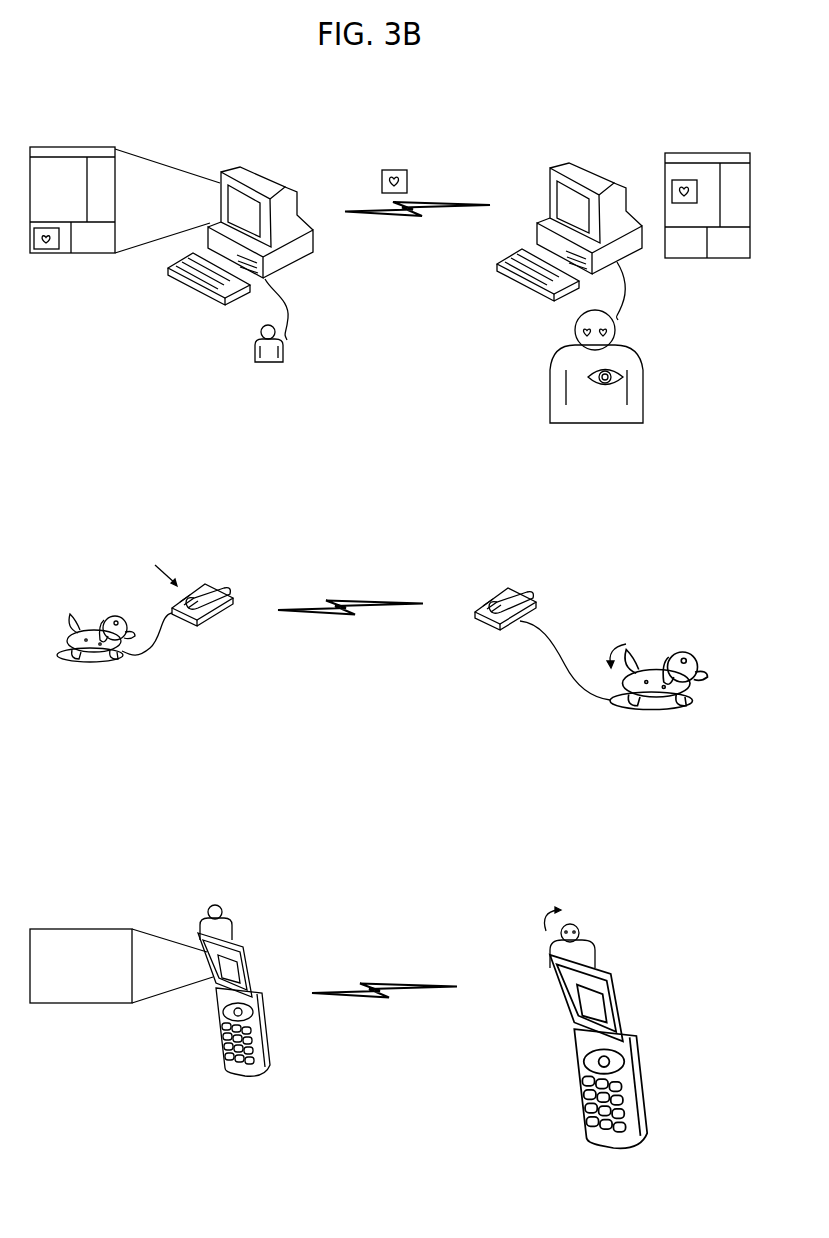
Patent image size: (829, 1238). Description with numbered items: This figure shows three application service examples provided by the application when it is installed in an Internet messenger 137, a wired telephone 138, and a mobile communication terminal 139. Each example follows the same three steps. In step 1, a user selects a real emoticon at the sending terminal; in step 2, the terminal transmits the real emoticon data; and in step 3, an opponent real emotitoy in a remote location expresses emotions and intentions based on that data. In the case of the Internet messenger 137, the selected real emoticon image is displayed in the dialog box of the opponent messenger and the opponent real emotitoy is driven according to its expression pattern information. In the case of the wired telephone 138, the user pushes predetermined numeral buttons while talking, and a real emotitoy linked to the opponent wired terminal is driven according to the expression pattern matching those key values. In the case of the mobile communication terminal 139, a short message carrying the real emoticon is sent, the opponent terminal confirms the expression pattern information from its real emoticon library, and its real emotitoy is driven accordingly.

The real emoticon selection step 1 is at (287, 353).
The real emoticon data transmission step 2 is at (432, 165).
The real emotitoy driving step 3 is at (630, 342).
The Internet messenger 137 is at (197, 90).
The wired telephone 138 is at (195, 500).
The mobile communication terminal 139 is at (152, 855).